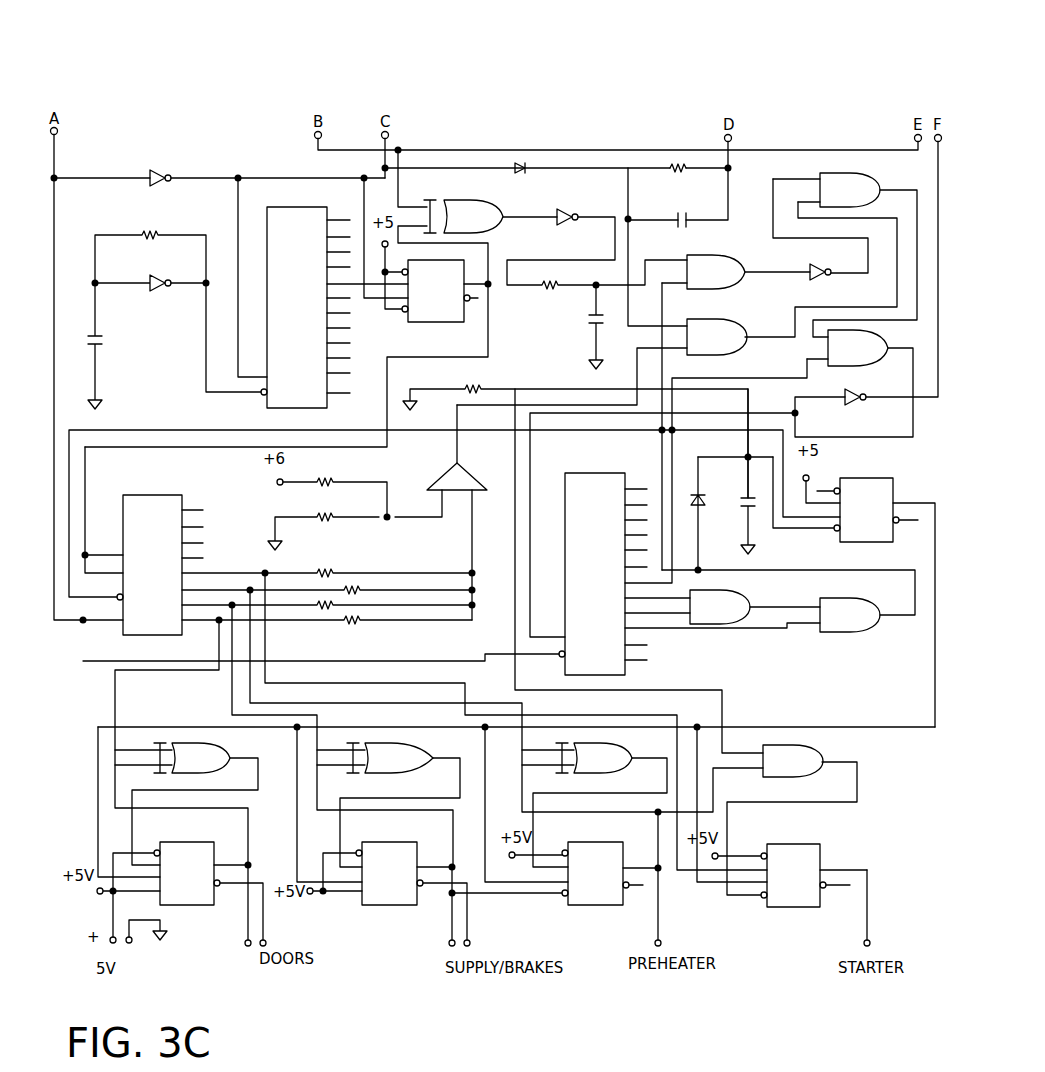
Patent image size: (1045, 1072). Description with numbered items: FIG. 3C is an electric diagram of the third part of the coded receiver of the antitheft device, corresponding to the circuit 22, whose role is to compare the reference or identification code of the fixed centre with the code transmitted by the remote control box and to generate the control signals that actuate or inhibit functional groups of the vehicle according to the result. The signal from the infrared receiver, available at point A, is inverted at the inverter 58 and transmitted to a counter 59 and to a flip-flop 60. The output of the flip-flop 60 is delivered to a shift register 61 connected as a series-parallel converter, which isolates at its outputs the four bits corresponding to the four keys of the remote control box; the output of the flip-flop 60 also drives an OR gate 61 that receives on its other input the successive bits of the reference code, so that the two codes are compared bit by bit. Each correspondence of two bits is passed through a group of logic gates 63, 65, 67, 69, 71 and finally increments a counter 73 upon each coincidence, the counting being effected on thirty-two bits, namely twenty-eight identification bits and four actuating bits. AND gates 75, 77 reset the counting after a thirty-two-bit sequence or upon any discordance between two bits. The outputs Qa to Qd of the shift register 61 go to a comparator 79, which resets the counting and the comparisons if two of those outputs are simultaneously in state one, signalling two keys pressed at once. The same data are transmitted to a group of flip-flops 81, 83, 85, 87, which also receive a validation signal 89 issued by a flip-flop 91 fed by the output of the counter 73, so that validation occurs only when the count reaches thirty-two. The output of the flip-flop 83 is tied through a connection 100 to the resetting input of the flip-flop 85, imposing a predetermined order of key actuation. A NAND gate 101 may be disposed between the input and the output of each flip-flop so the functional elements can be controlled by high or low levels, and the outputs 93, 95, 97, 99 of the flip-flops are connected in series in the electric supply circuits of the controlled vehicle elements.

The circuit 22 is at (383, 88).
The inverter 58 is at (170, 169).
The counter 59 is at (272, 264).
The flip-flop 60 is at (451, 311).
The shift register / OR gate 61 is at (463, 207).
The logic gate 63 is at (573, 213).
The logic gate 65 is at (728, 272).
The logic gate 67 is at (815, 281).
The logic gate 69 is at (828, 192).
The logic gate 71 is at (862, 345).
The counter 73 is at (578, 484).
The AND gate 75 is at (712, 610).
The AND gate 77 is at (848, 618).
The comparator 79 is at (448, 479).
The flip-flop 81 is at (196, 896).
The flip-flop 83 is at (405, 895).
The flip-flop 85 is at (608, 894).
The flip-flop 87 is at (802, 900).
The validation signal 89 is at (880, 728).
The flip-flop 91 is at (868, 490).
The output 93 is at (246, 925).
The output 95 is at (450, 925).
The output 97 is at (660, 913).
The output 99 is at (868, 893).
The connection 100 is at (532, 896).
The NAND gate 101 is at (190, 755).